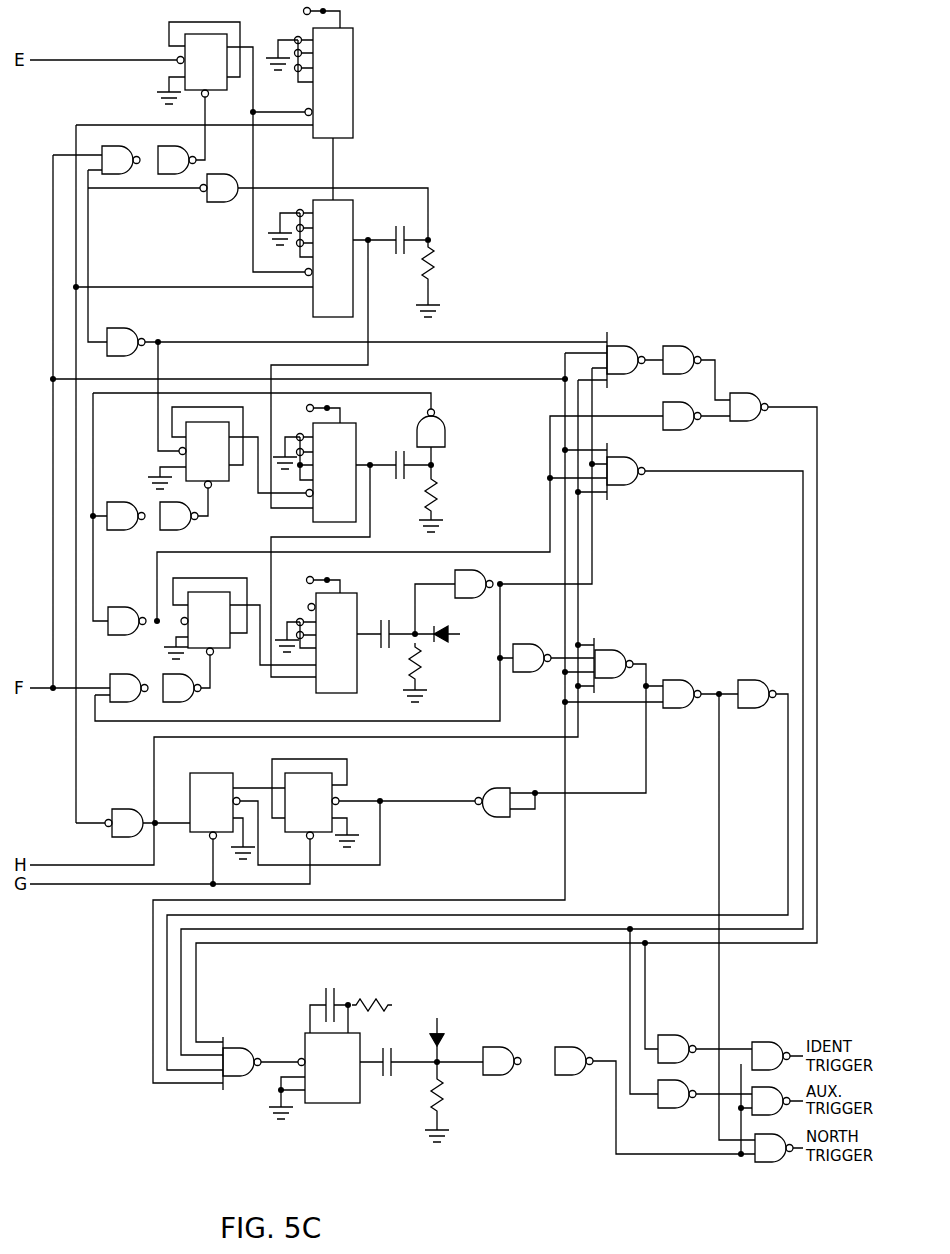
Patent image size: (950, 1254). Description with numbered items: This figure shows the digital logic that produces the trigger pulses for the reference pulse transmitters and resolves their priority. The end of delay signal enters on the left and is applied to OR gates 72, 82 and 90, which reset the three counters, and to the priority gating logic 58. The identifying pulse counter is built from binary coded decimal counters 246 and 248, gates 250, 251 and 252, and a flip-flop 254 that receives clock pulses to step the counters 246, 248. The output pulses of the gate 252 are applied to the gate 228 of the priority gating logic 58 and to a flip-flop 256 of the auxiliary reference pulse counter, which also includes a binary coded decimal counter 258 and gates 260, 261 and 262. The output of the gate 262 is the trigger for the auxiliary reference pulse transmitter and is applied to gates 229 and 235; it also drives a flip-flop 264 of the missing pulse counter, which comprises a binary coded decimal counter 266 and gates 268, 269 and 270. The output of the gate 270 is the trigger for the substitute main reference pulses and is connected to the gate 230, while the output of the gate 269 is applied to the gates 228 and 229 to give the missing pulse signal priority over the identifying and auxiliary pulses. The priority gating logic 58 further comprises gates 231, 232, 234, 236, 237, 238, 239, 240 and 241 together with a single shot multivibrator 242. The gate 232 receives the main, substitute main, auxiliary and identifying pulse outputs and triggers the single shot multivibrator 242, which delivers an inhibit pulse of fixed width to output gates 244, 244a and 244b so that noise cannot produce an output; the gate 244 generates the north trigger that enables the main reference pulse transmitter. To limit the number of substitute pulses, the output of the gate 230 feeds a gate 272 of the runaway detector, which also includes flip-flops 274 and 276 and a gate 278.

The priority gating logic 58 is at (662, 335).
The OR gate 72 is at (108, 146).
The OR gate 82 is at (130, 502).
The OR gate 90 is at (116, 672).
The gate 228 is at (644, 346).
The gate 229 is at (630, 485).
The gate 230 is at (638, 650).
The gate 231 is at (700, 668).
The gate 232 is at (247, 1048).
The gate 234 is at (708, 346).
The gate 235 is at (686, 430).
The gate 236 is at (771, 393).
The gate 237 is at (771, 680).
The gate 238 is at (505, 1047).
The gate 239 is at (581, 1047).
The gate 240 is at (685, 1035).
The gate 241 is at (680, 1110).
The single shot multivibrator 242 is at (345, 1075).
The gate 244 is at (768, 1162).
The output gate 244a is at (758, 1115).
The output gate 244b is at (762, 1033).
The binary coded decimal counter 246 is at (346, 89).
The binary coded decimal counter 248 is at (346, 266).
The gate 250 is at (184, 146).
The gate 251 is at (224, 203).
The gate 252 is at (128, 328).
The flip-flop 254 is at (220, 72).
The flip-flop 256 is at (220, 462).
The binary coded decimal counter 258 is at (347, 477).
The gate 260 is at (189, 529).
The gate 261 is at (445, 420).
The gate 262 is at (124, 605).
The flip-flop 264 is at (222, 632).
The binary coded decimal counter 266 is at (349, 648).
The gate 268 is at (188, 702).
The gate 269 is at (463, 571).
The gate 270 is at (528, 644).
The gate 272 is at (492, 788).
The flip-flop 274 is at (224, 812).
The flip-flop 276 is at (321, 812).
The gate 278 is at (134, 808).